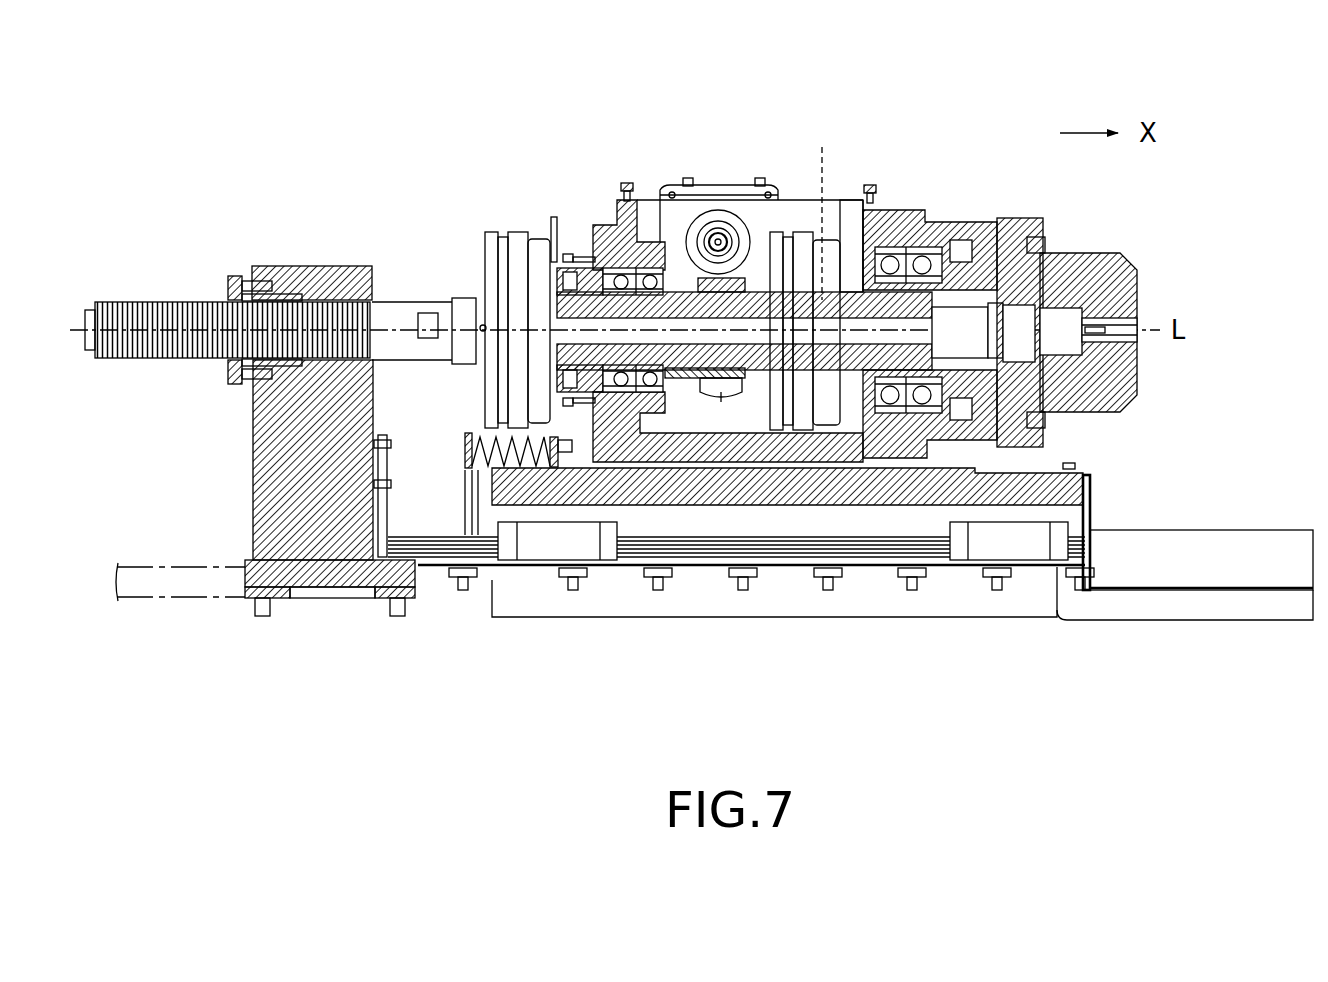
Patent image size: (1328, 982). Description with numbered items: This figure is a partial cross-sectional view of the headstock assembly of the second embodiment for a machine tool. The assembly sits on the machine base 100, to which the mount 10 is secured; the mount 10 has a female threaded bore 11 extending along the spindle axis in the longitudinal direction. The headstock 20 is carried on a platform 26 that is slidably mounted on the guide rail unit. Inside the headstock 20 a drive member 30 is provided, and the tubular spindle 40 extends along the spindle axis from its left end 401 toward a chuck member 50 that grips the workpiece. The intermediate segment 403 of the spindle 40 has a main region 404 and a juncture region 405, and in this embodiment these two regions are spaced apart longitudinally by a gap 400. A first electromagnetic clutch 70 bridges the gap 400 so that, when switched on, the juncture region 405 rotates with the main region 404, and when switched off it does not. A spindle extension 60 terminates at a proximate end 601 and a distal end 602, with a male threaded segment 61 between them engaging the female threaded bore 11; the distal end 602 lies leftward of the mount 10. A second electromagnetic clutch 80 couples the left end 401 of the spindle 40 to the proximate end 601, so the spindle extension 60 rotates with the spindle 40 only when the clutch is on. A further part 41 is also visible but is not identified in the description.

The mount 10 is at (340, 394).
The female threaded bore 11 is at (290, 268).
The headstock 20 is at (914, 160).
The platform 26 is at (1068, 492).
The drive member 30 is at (707, 178).
The spindle 40 is at (774, 370).
The key block 41 is at (722, 400).
The chuck member 50 is at (1122, 262).
The spindle extension 60 is at (217, 267).
The male threaded segment 61 is at (190, 306).
The distal end 602 is at (94, 310).
The proximate end 601 is at (462, 312).
The first electromagnetic clutch 70 is at (803, 243).
The second electromagnetic clutch 80 is at (515, 229).
The machine base 100 is at (177, 610).
The gap 400 is at (824, 209).
The left end 401 is at (565, 270).
The intermediate segment 403 is at (757, 300).
The main region 404 is at (757, 300).
The juncture region 405 is at (849, 290).